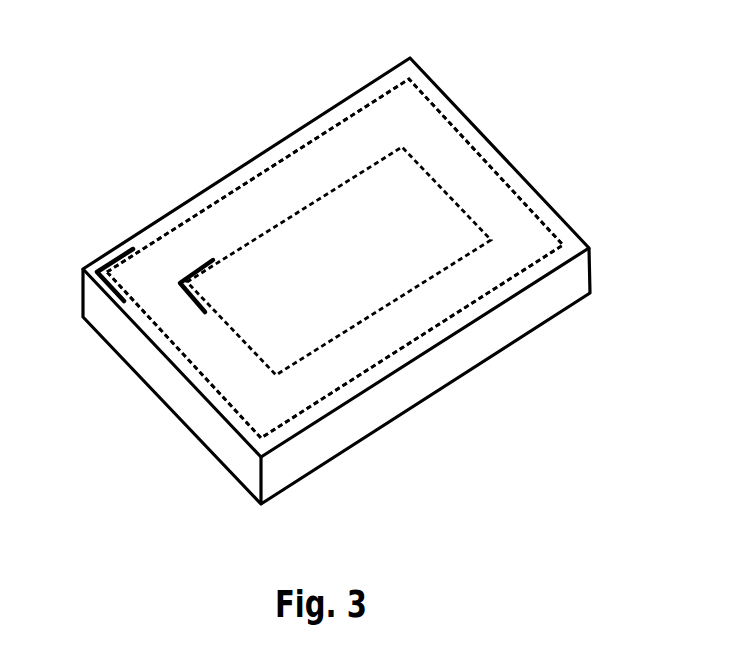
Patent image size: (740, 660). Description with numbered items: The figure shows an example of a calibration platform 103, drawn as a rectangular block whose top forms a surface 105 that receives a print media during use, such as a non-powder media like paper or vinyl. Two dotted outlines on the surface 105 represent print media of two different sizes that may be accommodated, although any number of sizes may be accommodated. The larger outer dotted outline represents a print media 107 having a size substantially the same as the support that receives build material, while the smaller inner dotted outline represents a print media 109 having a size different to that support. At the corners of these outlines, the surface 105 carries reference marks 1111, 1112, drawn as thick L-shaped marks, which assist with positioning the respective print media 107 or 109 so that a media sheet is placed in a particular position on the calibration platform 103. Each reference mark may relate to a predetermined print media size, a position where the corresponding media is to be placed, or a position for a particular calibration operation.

The calibration platform 103 is at (578, 232).
The surface 105 is at (317, 136).
The print media 107 is at (443, 114).
The print media 109 is at (480, 222).
The reference mark 1111 is at (110, 254).
The reference mark 1112 is at (197, 272).